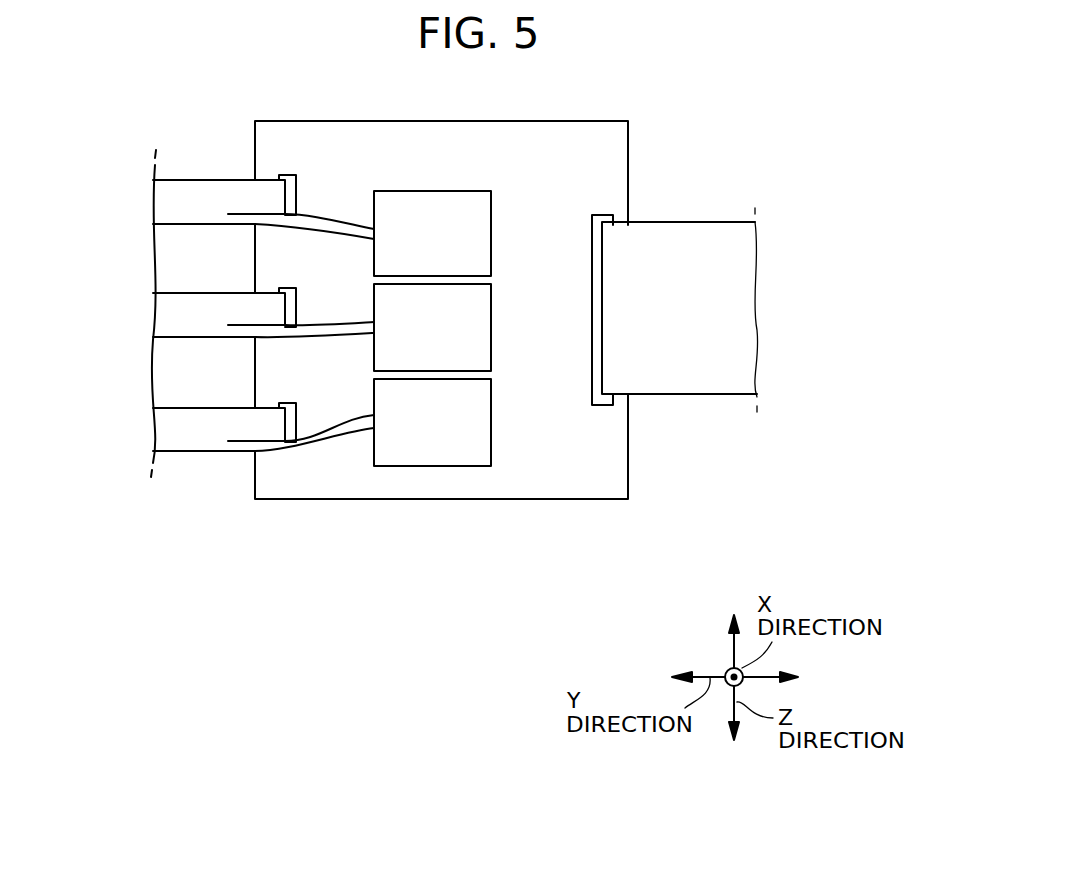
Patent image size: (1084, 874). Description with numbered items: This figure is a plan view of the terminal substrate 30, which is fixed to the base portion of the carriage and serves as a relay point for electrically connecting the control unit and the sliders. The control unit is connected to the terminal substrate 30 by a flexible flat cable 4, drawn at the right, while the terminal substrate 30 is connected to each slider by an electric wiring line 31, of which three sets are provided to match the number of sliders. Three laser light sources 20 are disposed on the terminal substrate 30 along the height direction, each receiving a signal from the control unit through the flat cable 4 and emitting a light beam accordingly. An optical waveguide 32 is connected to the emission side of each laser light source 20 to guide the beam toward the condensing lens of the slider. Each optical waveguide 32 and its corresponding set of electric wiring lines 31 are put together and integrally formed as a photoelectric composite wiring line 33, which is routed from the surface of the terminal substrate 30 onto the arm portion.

The flexible flat cable 4 is at (688, 367).
The laser light source 20 is at (437, 427).
The terminal substrate 30 is at (430, 482).
The electric wiring line 31 is at (266, 424).
The optical waveguide 32 is at (319, 226).
The photoelectric composite wiring line 33 is at (182, 200).